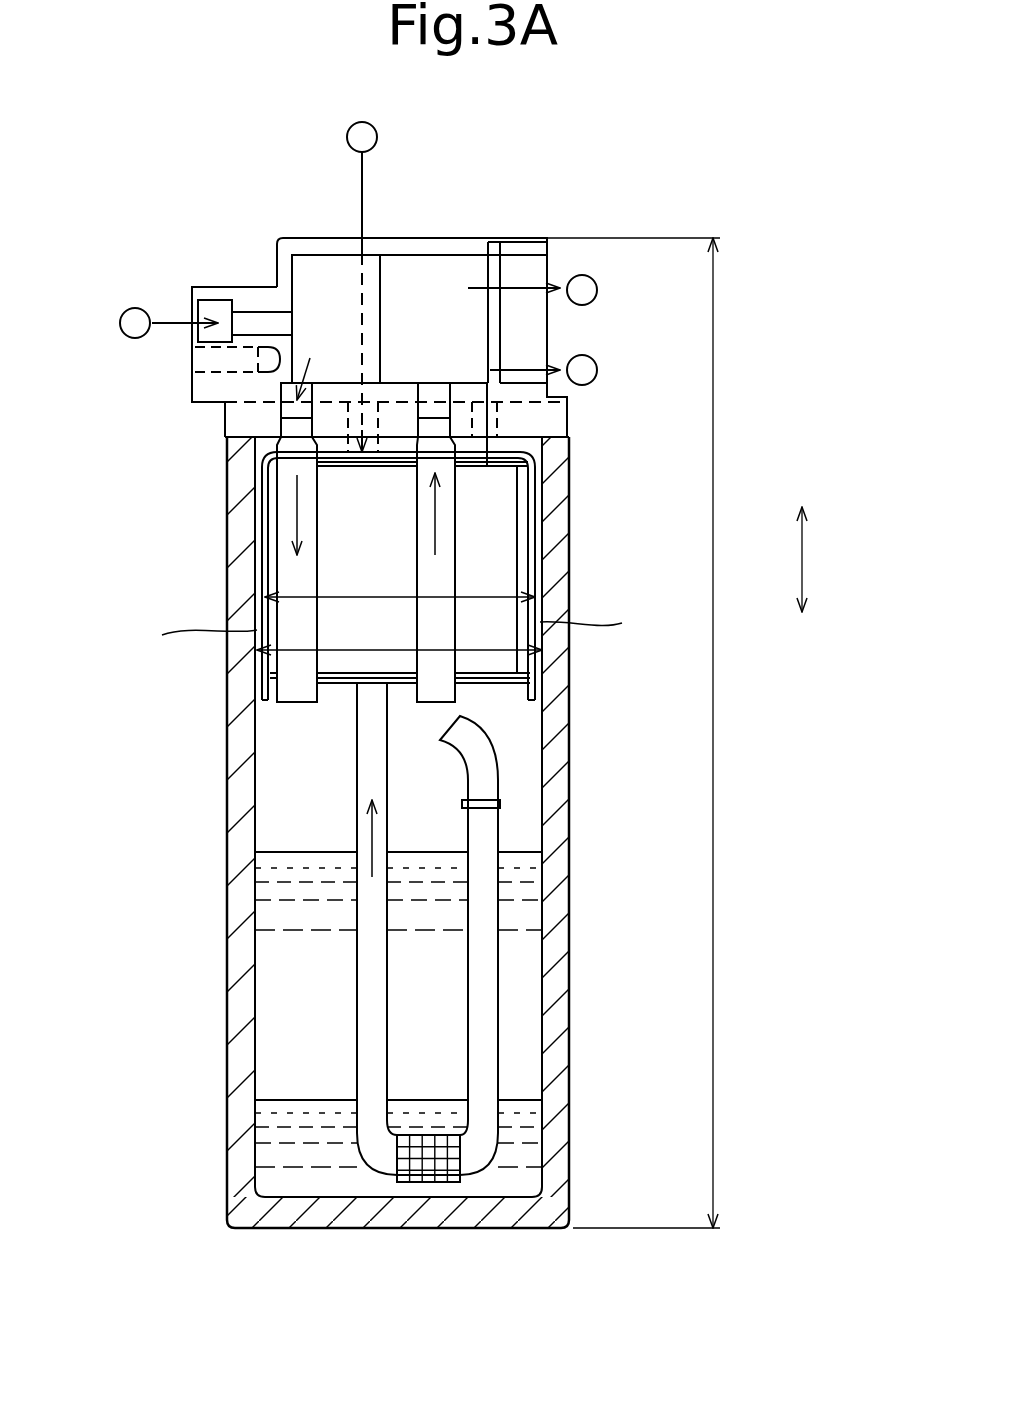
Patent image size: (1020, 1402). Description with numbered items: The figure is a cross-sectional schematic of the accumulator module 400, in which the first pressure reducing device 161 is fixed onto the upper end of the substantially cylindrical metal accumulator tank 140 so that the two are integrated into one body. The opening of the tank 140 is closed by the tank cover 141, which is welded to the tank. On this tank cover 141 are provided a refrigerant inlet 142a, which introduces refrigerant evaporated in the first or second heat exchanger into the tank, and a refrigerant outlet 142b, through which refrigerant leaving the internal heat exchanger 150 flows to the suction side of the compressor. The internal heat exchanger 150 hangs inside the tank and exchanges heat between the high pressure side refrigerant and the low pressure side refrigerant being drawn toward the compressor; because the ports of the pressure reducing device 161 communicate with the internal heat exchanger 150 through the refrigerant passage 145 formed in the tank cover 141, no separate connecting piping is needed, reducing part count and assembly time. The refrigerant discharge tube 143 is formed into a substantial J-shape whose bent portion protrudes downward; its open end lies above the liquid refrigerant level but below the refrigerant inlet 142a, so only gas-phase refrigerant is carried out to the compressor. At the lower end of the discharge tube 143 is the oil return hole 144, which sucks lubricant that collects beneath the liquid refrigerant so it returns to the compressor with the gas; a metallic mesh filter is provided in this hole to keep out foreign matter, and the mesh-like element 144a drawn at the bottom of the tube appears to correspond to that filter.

The accumulator module 400 is at (173, 170).
The first pressure reducing device 161 is at (295, 232).
The refrigerant passage 145 is at (290, 413).
The refrigerant inlet 142a is at (223, 435).
The tank cover 141 is at (547, 425).
The refrigerant outlet 142b is at (555, 453).
The internal heat exchanger 150 is at (493, 565).
The accumulator tank 140 is at (569, 808).
The refrigerant discharge tube 143 is at (498, 945).
The porous plate 144a is at (432, 1163).
The oil return hole 144 is at (440, 1180).